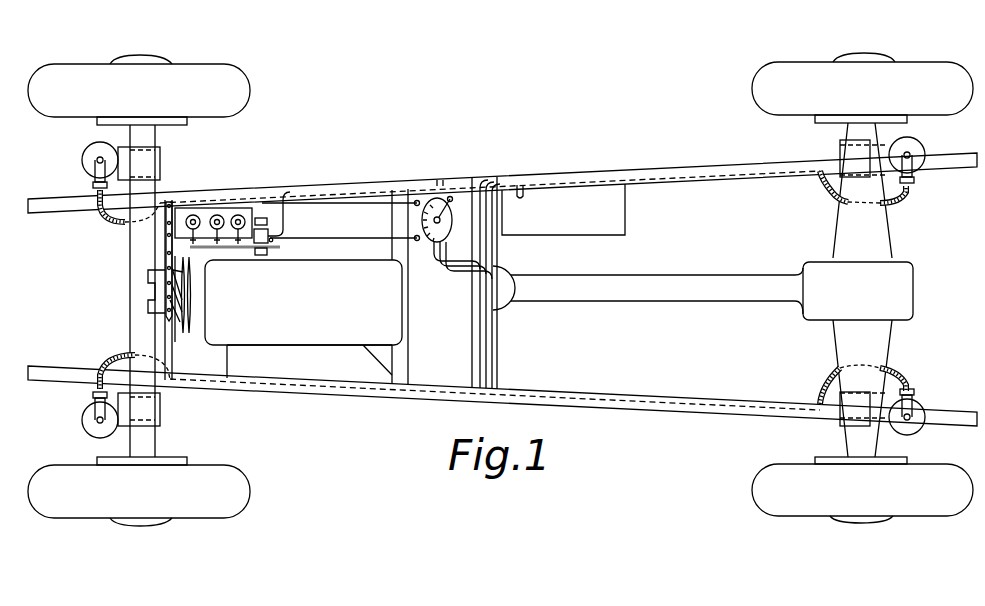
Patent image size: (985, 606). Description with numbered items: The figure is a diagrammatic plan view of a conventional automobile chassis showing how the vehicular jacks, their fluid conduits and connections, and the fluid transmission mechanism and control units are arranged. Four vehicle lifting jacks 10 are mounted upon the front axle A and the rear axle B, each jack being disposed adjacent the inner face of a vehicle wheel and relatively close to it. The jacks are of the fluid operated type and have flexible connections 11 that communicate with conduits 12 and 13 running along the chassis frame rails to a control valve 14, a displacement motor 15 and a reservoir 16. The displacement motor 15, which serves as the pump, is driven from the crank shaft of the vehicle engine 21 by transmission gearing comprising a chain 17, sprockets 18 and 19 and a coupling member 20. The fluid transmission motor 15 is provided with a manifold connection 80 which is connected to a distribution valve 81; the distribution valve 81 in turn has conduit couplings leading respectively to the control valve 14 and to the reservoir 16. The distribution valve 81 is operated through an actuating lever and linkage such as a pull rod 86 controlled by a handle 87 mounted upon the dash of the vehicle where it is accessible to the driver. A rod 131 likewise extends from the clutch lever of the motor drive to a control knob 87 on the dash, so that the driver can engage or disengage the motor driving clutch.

The vehicle lifting jack 10 is at (88, 158).
The flexible connection 11 is at (110, 358).
The conduit 12 is at (208, 187).
The conduit 13 is at (643, 166).
The control valve 14 is at (422, 248).
The displacement motor 15 is at (230, 207).
The reservoir 16 is at (620, 213).
The chain 17 is at (166, 252).
The sprocket 18 is at (166, 233).
The sprocket 19 is at (160, 290).
The coupling member 20 is at (170, 313).
The vehicle engine 21 is at (284, 327).
The manifold connection 80 is at (230, 246).
The distribution valve 81 is at (272, 248).
The pull rod 86 is at (328, 238).
The handle 87 is at (420, 197).
The rod 131 is at (340, 200).
The front axle A is at (135, 337).
The rear axle B is at (877, 340).